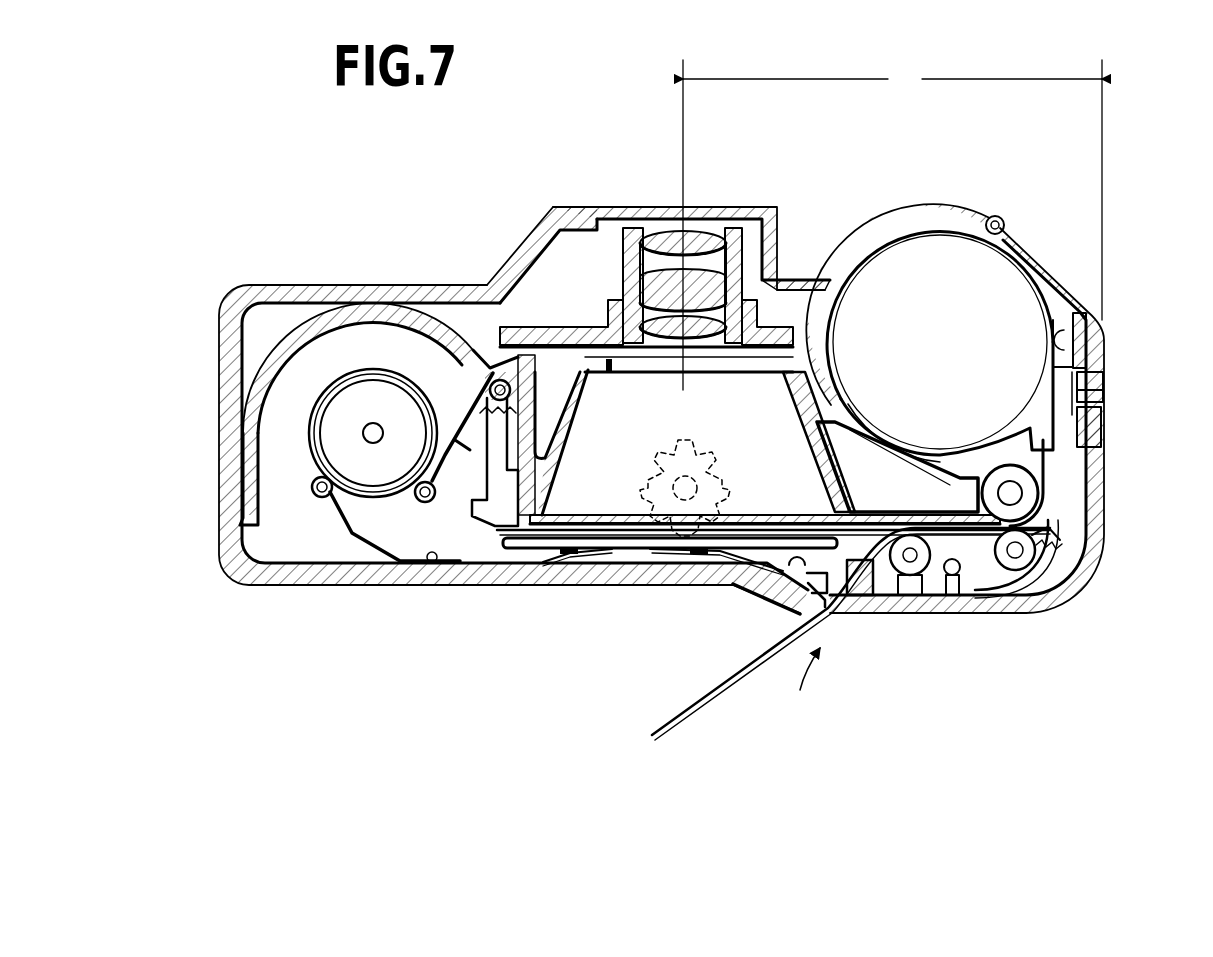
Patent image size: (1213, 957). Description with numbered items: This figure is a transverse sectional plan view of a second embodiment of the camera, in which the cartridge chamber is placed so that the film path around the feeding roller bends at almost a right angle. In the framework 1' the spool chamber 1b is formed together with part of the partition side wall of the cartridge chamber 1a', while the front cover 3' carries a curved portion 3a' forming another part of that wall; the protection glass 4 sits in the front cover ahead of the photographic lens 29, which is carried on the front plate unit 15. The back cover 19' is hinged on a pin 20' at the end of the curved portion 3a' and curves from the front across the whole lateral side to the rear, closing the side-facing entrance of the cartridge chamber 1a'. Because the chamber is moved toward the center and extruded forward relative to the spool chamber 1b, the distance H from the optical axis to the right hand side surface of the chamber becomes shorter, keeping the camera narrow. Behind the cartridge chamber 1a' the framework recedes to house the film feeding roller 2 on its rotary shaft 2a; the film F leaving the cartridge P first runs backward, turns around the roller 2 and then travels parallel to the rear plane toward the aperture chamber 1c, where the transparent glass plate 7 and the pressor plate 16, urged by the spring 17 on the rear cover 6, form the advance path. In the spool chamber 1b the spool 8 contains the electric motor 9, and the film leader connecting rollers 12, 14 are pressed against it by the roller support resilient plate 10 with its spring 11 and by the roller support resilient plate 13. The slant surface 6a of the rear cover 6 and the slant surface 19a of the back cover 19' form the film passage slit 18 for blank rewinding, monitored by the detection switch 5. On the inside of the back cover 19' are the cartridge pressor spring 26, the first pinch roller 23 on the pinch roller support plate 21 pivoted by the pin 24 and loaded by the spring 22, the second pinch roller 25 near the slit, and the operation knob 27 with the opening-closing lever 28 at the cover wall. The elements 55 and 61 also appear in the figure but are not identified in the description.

The spool chamber 1b is at (250, 372).
The aperture chamber 1c is at (585, 335).
The framework 1' is at (785, 428).
The cartridge chamber 1a' is at (967, 405).
The film feeding roller 2 is at (955, 484).
The rotary shaft 2a is at (1010, 480).
The front cover 3' is at (542, 250).
The curved portion 3a' is at (929, 319).
The protection glass 4 is at (606, 207).
The detection switch 5 is at (790, 603).
The rear cover 6 is at (487, 575).
The slant surface 6a is at (806, 612).
The transparent glass plate 7 is at (607, 515).
The spool 8 is at (318, 456).
The electric motor 9 is at (322, 420).
The roller support resilient plate 10 is at (462, 480).
The spring 11 is at (488, 415).
The film leader connecting roller 12 is at (420, 502).
The roller support resilient plate 13 is at (372, 556).
The film leader connecting roller 14 is at (318, 500).
The front plate unit 15 is at (782, 292).
The pressor plate 16 is at (530, 549).
The spring 17 is at (615, 565).
The film passage slit 18 is at (804, 675).
The back cover 19' is at (1113, 270).
The slant surface 19a is at (866, 600).
The pin 20' is at (1001, 202).
The pinch roller support plate 21 is at (1000, 592).
The spring 22 is at (1062, 538).
The first pinch roller 23 is at (1032, 568).
The pin 24 is at (958, 580).
The second pinch roller 25 is at (918, 578).
The cartridge pressor spring 26 is at (1090, 316).
The back cover opening-closing operation knob 27 is at (1100, 380).
The back cover opening-closing lever 28 is at (1100, 398).
The photographic lens 29 is at (703, 238).
The sprocket gear 55 is at (726, 470).
The slot edge 61 is at (830, 620).
The film F is at (700, 712).
The cartridge P is at (940, 245).
The distance H is at (892, 225).